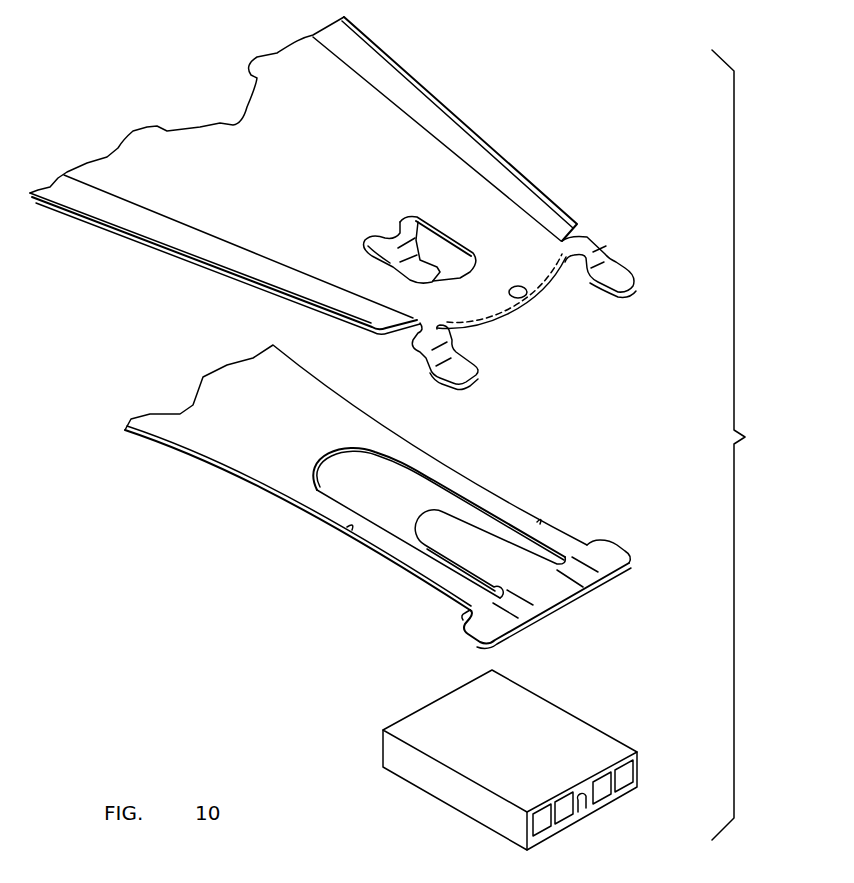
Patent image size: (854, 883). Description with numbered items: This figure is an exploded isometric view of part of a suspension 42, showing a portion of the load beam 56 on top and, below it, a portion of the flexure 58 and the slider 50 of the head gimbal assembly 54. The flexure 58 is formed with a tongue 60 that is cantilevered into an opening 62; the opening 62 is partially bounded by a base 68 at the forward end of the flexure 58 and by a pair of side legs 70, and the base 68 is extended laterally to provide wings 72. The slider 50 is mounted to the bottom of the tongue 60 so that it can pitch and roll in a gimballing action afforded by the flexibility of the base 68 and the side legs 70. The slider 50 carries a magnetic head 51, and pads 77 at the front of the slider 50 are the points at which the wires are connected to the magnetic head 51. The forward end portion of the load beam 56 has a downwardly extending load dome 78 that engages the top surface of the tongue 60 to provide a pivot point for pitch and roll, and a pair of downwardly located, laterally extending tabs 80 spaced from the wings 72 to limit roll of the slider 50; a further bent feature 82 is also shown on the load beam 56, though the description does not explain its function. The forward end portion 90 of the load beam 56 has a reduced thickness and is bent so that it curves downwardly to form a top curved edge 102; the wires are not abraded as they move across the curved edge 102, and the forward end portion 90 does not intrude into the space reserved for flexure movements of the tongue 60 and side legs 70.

The suspension 42 is at (744, 445).
The slider 50 is at (447, 800).
The magnetic head 51 is at (587, 810).
The head gimbal assembly 54 is at (390, 693).
The load beam 56 is at (237, 136).
The flexure 58 is at (213, 468).
The tongue 60 is at (463, 530).
The opening 62 is at (330, 488).
The base 68 is at (557, 592).
The side legs 70 is at (347, 527).
The wings 72 is at (620, 548).
The pads 77 is at (628, 777).
The load dome 78 is at (518, 284).
The tabs 80 is at (633, 271).
The spring tab 82 is at (425, 265).
The forward end portion 90 is at (528, 313).
The curved edge 102 is at (560, 290).